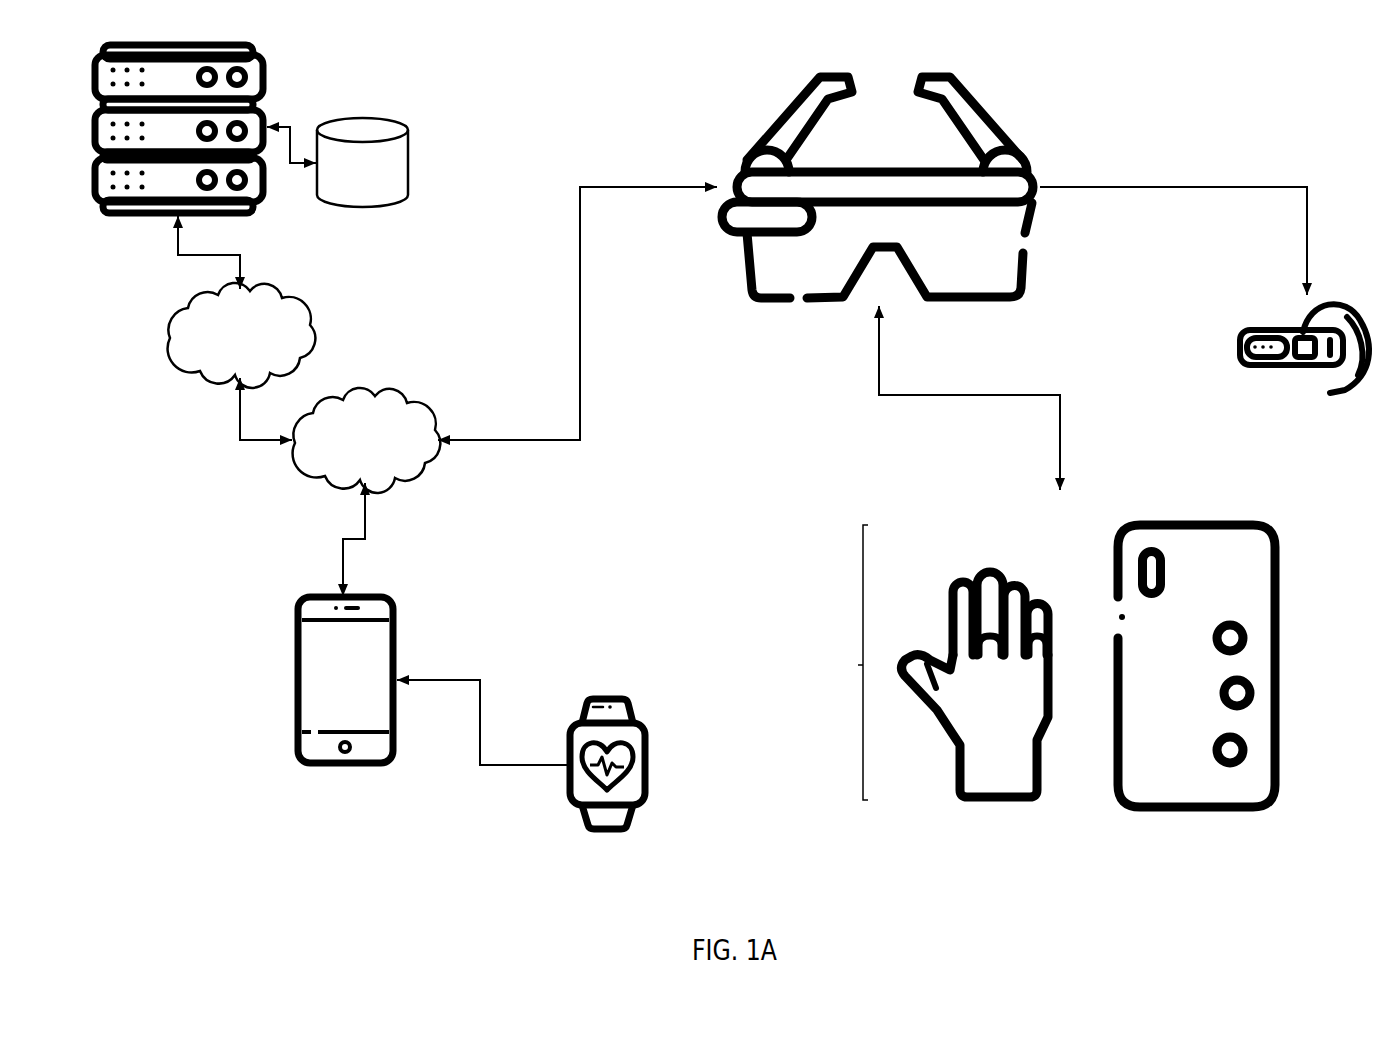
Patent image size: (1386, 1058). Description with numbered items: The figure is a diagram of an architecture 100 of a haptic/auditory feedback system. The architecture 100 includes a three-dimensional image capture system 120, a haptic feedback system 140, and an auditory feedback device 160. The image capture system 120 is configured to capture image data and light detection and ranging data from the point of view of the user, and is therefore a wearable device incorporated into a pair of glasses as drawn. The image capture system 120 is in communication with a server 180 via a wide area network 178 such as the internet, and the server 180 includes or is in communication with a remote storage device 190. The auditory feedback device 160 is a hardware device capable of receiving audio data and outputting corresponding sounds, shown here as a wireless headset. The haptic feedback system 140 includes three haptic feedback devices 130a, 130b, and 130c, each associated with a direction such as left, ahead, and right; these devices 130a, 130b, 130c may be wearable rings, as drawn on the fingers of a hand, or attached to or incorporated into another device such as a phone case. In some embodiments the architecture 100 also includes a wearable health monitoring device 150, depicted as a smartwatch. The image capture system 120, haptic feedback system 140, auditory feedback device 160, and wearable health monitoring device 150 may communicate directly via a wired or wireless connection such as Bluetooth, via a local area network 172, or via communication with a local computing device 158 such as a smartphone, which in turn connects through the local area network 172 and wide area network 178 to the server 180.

The architecture 100 is at (1316, 78).
The three-dimensional image capture system 120 is at (721, 224).
The haptic feedback device 130a is at (941, 690).
The haptic feedback device 130b is at (987, 662).
The haptic feedback device 130c is at (1035, 662).
The haptic feedback system 140 is at (933, 662).
The wearable health monitoring device 150 is at (647, 741).
The local computing device 158 is at (394, 635).
The auditory feedback device 160 is at (1240, 374).
The local area network 172 is at (418, 400).
The wide area network 178 is at (302, 302).
The server 180 is at (264, 78).
The remote storage device 190 is at (409, 165).